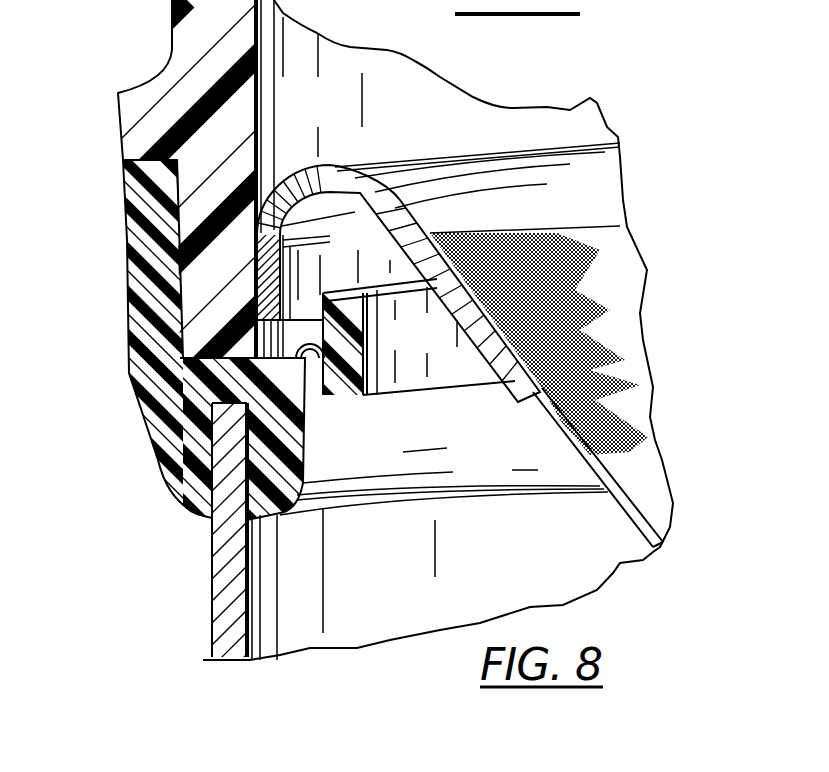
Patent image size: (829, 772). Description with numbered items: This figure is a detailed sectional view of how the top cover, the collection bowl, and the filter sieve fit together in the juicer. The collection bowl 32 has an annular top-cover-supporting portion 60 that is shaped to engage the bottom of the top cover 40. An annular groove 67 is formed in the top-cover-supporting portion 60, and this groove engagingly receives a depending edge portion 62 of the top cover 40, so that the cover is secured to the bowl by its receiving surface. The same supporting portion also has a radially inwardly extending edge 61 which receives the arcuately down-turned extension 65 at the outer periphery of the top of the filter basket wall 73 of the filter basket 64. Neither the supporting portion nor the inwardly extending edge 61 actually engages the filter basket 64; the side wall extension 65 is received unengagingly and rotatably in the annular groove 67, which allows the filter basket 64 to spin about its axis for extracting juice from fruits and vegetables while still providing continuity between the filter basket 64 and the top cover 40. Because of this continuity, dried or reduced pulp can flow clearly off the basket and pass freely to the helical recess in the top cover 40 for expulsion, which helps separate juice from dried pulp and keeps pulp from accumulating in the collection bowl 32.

The collection bowl 32 is at (212, 537).
The top cover 40 is at (172, 35).
The top-cover-supporting portion 60 is at (122, 245).
The radially inwardly extending edge 61 is at (423, 346).
The depending edge portion 62 is at (166, 203).
The filter basket 64 is at (330, 165).
The arcuate downturning extension 65 is at (266, 196).
The annular groove 67 is at (322, 359).
The filter basket wall 73 is at (558, 440).